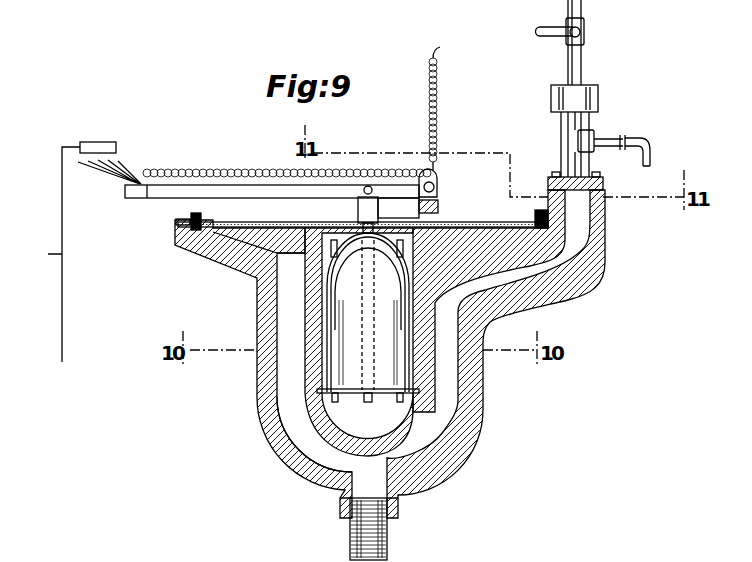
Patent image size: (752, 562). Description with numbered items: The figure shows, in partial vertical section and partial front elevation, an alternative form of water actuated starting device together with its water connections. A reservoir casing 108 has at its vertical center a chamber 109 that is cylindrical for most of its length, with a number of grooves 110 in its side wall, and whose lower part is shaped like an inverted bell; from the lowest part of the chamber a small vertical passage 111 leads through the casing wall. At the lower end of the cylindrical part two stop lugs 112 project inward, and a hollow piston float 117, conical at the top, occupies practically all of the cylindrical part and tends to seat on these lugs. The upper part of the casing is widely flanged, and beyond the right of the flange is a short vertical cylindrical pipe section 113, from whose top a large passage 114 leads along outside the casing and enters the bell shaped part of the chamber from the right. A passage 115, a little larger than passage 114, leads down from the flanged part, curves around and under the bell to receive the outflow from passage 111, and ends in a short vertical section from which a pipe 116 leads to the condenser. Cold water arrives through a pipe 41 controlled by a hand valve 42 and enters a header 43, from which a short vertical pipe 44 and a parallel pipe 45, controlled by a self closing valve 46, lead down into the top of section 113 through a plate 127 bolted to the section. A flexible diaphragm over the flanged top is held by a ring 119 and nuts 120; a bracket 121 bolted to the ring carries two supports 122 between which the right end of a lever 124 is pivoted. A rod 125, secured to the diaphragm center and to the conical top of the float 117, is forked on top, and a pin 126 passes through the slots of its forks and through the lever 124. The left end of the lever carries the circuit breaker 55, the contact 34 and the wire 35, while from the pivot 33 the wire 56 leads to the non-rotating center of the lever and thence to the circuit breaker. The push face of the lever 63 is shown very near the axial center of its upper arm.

The pivot 33 is at (437, 55).
The contact 34 is at (90, 142).
The wire 35 is at (51, 254).
The pipe 41 is at (584, 12).
The hand valve 42 is at (540, 29).
The header 43 is at (600, 96).
The short vertical pipe 44 is at (568, 157).
The pipe 45 is at (590, 168).
The self closing valve 46 is at (594, 136).
The circuit breaker 55 is at (127, 166).
The wire 56 is at (236, 168).
The lever 63 is at (652, 157).
The reservoir casing 108 is at (270, 423).
The chamber 109 is at (327, 417).
The grooves 110 is at (406, 251).
The small vertical passage 111 is at (372, 443).
The stop lugs 112 is at (305, 396).
The vertical cylindrical pipe section 113 is at (283, 229).
The large passage 114 is at (517, 273).
The passage 115 is at (290, 383).
The pipe 116 is at (388, 546).
The hollow piston float 117 is at (357, 303).
The ring 119 is at (180, 225).
The nuts 120 is at (189, 217).
The bracket 121 is at (438, 202).
The supports 122 is at (440, 177).
The lever 124 is at (270, 197).
The rod 125 is at (378, 209).
The pin 126 is at (363, 193).
The plate 127 is at (605, 186).